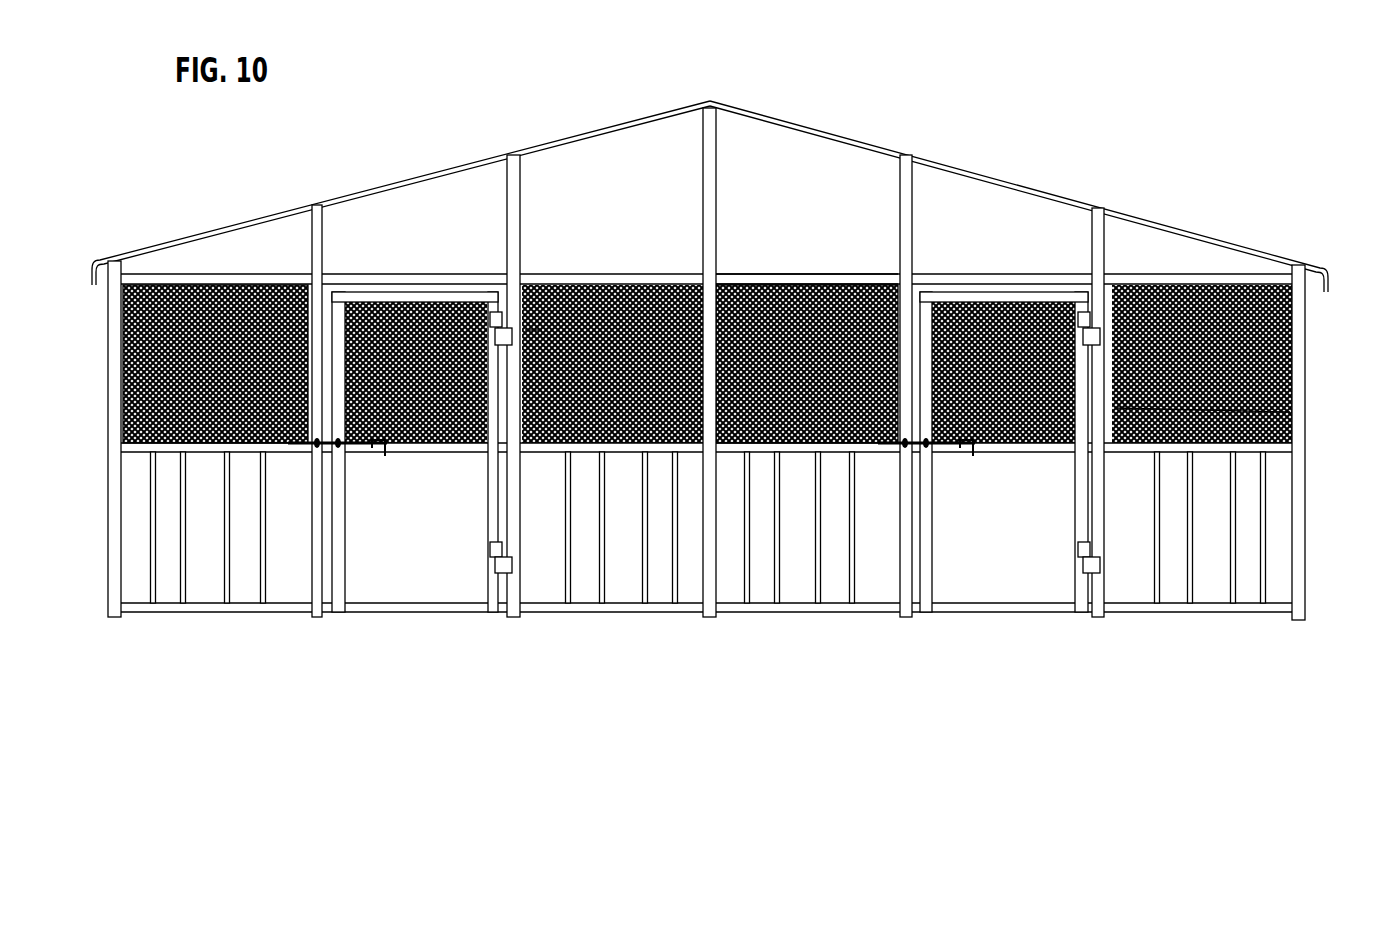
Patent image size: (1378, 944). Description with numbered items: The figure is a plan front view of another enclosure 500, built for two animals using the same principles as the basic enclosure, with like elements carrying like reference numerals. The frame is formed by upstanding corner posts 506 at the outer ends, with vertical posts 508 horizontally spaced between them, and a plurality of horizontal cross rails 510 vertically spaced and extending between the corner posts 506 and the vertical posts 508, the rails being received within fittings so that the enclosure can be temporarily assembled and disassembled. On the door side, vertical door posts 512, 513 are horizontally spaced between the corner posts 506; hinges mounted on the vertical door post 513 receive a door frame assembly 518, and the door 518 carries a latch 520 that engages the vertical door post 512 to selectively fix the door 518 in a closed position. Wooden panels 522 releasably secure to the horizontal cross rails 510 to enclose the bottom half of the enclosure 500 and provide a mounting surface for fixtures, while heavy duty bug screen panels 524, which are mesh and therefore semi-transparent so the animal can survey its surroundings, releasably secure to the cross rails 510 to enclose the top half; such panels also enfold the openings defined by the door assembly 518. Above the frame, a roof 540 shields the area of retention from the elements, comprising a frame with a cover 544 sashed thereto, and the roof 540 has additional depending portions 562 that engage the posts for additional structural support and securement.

The enclosure 500 is at (1058, 132).
The roof 540 is at (1061, 189).
The cover 544 is at (219, 228).
The depending portions 562 is at (322, 240).
The horizontal cross rails 510 is at (255, 283).
The vertical door post 512 is at (313, 332).
The vertical door post 513 is at (542, 330).
The upstanding corner posts 506 is at (123, 375).
The vertical posts 508 is at (750, 290).
The bug screen panels 524 is at (229, 379).
The door frame assembly 518 is at (409, 570).
The latch 520 is at (365, 455).
The wooden panels 522 is at (240, 578).